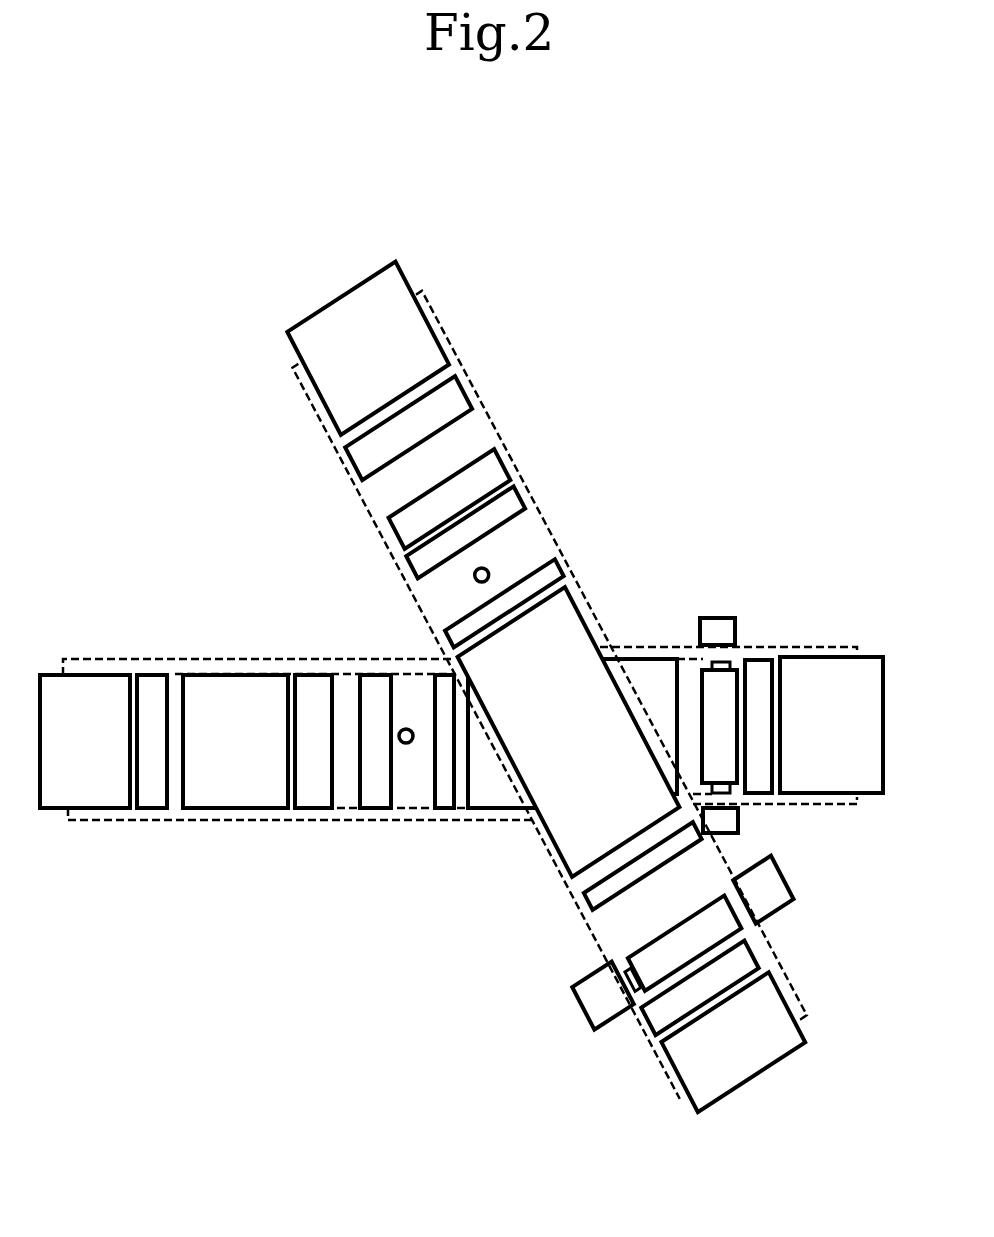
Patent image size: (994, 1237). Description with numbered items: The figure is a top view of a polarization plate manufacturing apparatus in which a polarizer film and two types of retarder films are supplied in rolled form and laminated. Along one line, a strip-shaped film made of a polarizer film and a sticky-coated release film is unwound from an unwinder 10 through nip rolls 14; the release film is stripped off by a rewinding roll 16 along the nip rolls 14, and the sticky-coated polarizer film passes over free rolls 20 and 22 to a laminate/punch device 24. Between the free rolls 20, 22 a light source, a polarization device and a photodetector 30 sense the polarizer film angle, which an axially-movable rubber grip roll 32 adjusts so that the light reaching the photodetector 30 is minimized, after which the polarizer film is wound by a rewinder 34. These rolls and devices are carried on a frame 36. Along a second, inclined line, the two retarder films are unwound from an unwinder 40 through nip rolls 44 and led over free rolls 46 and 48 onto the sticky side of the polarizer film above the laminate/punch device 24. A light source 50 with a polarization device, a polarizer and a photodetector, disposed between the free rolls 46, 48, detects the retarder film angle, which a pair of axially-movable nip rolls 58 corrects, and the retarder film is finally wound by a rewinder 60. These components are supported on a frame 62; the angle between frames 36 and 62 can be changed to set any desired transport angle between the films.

The unwinder 10 is at (233, 790).
The nip rolls 14 is at (329, 793).
The rewinding roll 16 is at (68, 795).
The free roll 20 is at (377, 797).
The free roll 22 is at (444, 797).
The laminate/punch device 24 is at (638, 637).
The photodetector 30 is at (406, 724).
The rubber grip roll 32 is at (720, 688).
The rewinder 34 is at (858, 738).
The frame 36 is at (221, 660).
The unwinder 40 is at (330, 373).
The nip rolls 44 is at (370, 458).
The free roll 46 is at (402, 533).
The free roll 48 is at (546, 573).
The light source 50 is at (485, 566).
The nip rolls 58 is at (698, 933).
The rewinder 60 is at (748, 1058).
The frame 62 is at (447, 332).